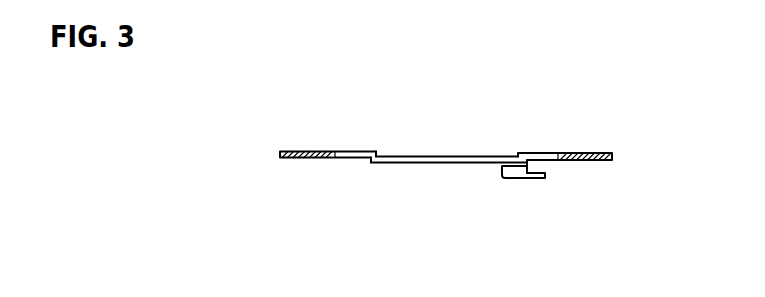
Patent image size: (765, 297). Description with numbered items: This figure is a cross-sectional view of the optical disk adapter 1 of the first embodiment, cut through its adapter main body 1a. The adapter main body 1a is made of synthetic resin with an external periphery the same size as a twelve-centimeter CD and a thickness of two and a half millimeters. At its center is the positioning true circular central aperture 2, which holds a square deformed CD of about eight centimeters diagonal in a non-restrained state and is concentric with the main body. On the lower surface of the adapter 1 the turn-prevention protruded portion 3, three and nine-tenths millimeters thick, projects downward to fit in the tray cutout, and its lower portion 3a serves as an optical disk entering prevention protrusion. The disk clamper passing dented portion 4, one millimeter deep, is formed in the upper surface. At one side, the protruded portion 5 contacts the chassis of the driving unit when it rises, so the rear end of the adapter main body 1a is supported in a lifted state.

The optical disk adapter 1 is at (603, 190).
The adapter main body 1a is at (585, 152).
The positioning true circular central aperture 2 is at (345, 150).
The turn-prevention protruded portion 3 is at (368, 163).
The lower portion 3a is at (443, 166).
The disk clamper passing dented portion 4 is at (432, 156).
The protruded portion 5 is at (535, 178).